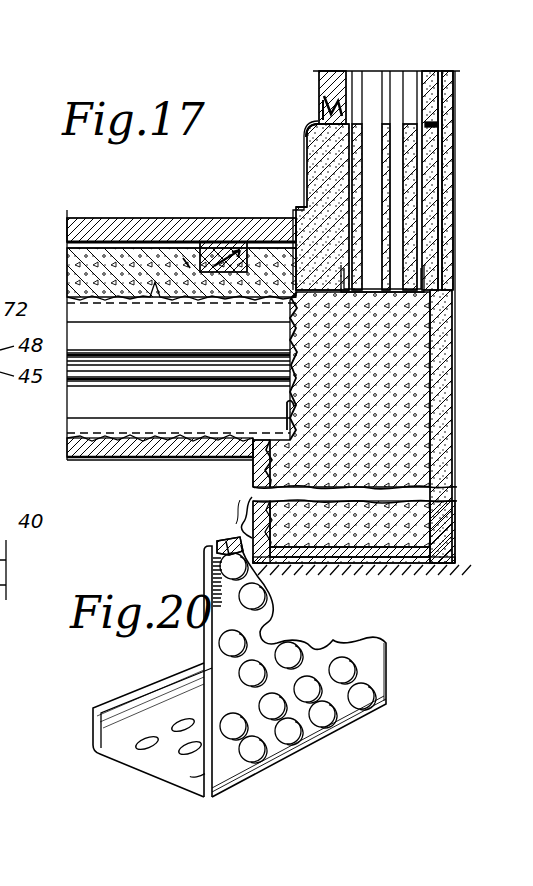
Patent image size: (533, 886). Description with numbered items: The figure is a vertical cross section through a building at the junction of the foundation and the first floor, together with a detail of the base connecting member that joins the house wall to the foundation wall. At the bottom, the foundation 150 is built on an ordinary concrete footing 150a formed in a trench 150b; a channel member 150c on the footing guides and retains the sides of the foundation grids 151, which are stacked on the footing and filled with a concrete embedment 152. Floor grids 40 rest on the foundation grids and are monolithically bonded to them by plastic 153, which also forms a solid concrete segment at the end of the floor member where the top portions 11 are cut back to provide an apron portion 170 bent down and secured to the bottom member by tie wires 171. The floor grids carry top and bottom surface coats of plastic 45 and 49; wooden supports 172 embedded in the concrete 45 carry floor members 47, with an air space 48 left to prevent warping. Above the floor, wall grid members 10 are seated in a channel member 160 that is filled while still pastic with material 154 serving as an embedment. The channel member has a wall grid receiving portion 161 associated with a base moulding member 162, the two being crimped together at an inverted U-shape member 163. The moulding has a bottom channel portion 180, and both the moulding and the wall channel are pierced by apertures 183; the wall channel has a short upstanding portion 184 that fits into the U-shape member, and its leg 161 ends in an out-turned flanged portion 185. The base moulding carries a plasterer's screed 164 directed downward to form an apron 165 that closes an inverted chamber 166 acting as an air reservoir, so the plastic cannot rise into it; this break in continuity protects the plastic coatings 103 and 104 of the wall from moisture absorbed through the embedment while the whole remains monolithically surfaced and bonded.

In FIG. 17, the wall grid members 10 is at (393, 82).
In FIG. 17, the top portions 11 is at (145, 458).
In FIG. 17, the floor grids 40 is at (178, 358).
In FIG. 17, the top surface coat of plastic 45 is at (67, 265).
In FIG. 17, the floor members 47 is at (78, 218).
In FIG. 17, the air space 48 is at (67, 245).
In FIG. 17, the bottom surface coat of plastic 49 is at (105, 458).
In FIG. 17, the plastic coating 103 is at (335, 80).
In FIG. 17, the plastic coating 104 is at (319, 88).
In FIG. 17, the foundation 150 is at (253, 468).
In FIG. 17, the footing 150a is at (445, 567).
In FIG. 17, the trench 150b is at (224, 508).
In FIG. 17, the channel member 150c is at (341, 560).
In FIG. 17, the foundation grids 151 is at (420, 490).
In FIG. 17, the embedment 152 is at (410, 535).
In FIG. 17, the plastic 153 is at (413, 387).
In FIG. 17, the plastic material 154 is at (320, 183).
In FIG. 17, the channel member 160 is at (400, 287).
In FIG. 20, the channel member 160 is at (150, 773).
In FIG. 17, the wall grid receiving portion 161 is at (393, 250).
In FIG. 20, the wall grid receiving portion 161 is at (388, 687).
In FIG. 17, the base moulding member 162 is at (304, 157).
In FIG. 17, the inverted U-shape member 163 is at (296, 208).
In FIG. 17, the plasterer's screed 164 is at (323, 107).
In FIG. 17, the apron 165 is at (343, 114).
In FIG. 17, the closed channel 166 is at (317, 125).
In FIG. 17, the apron portion 170 is at (290, 340).
In FIG. 17, the tie wires 171 is at (287, 410).
In FIG. 17, the supports 172 is at (185, 262).
In FIG. 17, the bottom channel portion 180 is at (250, 242).
In FIG. 17, the apertures 183 is at (210, 243).
In FIG. 20, the apertures 183 is at (350, 668).
In FIG. 20, the short upstanding portion 184 is at (93, 712).
In FIG. 17, the out-turned flanged portion 185 is at (441, 121).
In FIG. 20, the out-turned flanged portion 185 is at (226, 537).